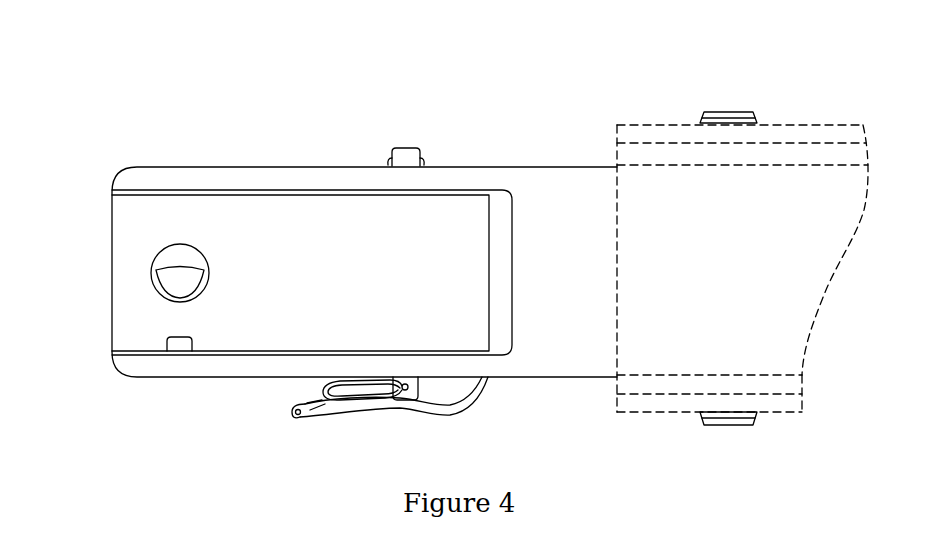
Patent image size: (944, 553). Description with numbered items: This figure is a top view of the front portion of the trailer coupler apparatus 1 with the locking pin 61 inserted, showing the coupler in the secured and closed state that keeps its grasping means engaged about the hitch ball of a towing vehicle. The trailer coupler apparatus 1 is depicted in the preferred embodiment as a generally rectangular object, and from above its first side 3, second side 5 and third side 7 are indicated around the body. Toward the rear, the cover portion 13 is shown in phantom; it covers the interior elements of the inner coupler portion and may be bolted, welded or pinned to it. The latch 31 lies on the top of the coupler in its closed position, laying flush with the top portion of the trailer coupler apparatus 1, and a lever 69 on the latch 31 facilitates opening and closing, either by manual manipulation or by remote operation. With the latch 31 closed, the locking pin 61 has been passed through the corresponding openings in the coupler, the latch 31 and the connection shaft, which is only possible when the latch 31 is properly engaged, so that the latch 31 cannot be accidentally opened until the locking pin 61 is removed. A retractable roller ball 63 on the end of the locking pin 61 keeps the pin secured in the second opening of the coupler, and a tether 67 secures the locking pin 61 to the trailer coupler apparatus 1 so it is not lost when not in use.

The trailer coupler apparatus 1 is at (546, 105).
The first side 3 is at (210, 166).
The second side 5 is at (98, 222).
The third side 7 is at (255, 399).
The cover portion 13 is at (722, 183).
The latch 31 is at (278, 243).
The locking pin 61 is at (439, 412).
The retractable roller ball 63 is at (423, 158).
The tether 67 is at (466, 400).
The lever 69 is at (165, 255).